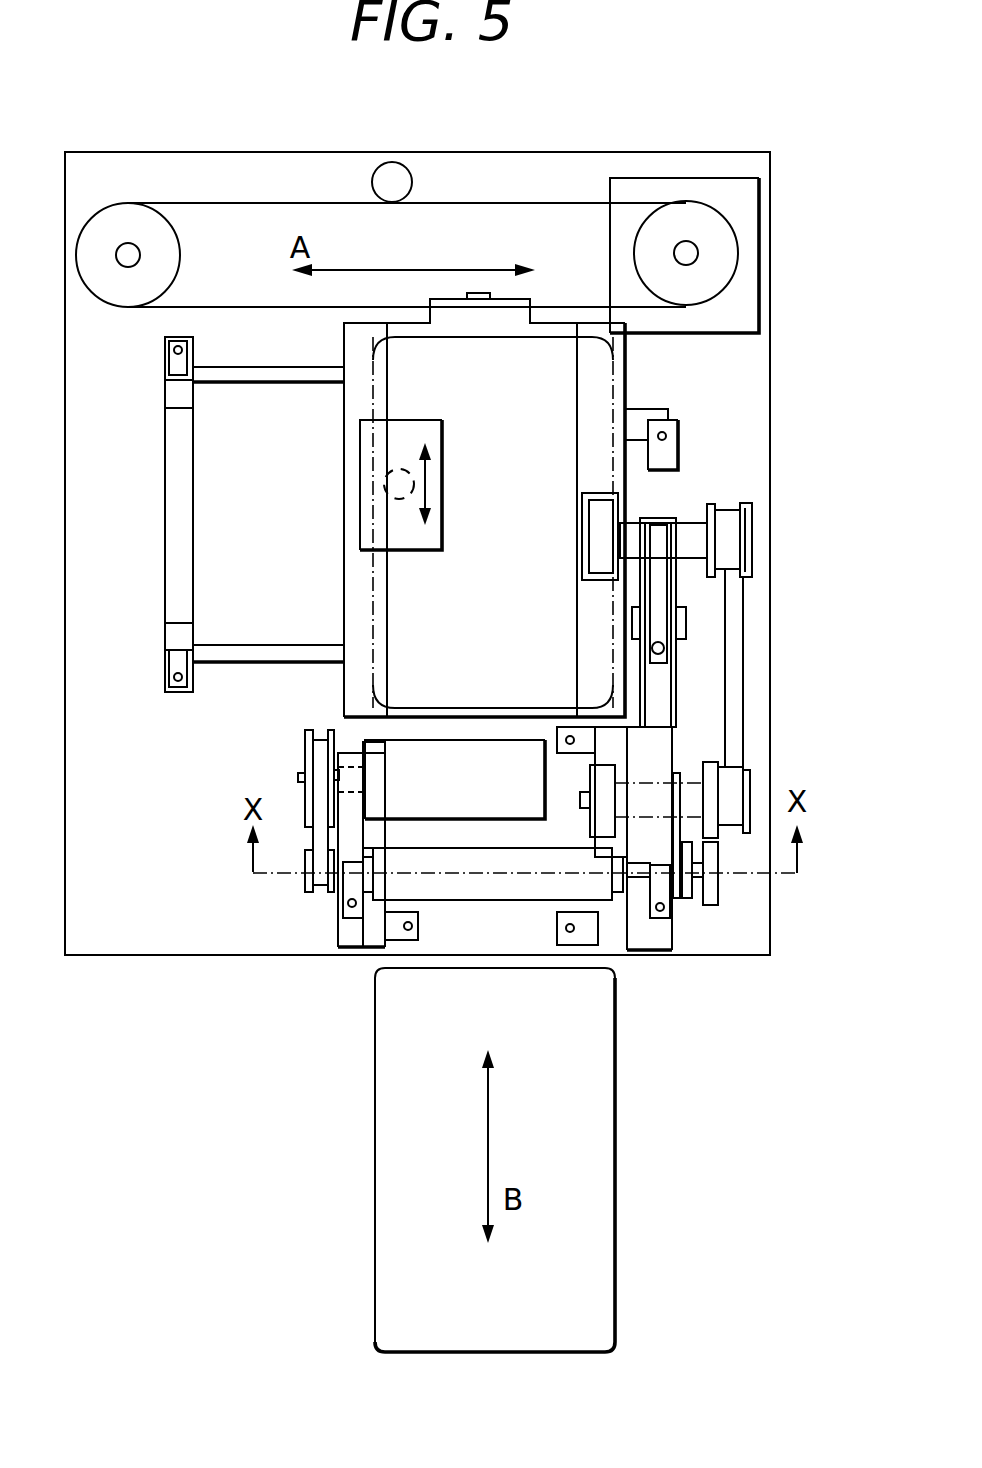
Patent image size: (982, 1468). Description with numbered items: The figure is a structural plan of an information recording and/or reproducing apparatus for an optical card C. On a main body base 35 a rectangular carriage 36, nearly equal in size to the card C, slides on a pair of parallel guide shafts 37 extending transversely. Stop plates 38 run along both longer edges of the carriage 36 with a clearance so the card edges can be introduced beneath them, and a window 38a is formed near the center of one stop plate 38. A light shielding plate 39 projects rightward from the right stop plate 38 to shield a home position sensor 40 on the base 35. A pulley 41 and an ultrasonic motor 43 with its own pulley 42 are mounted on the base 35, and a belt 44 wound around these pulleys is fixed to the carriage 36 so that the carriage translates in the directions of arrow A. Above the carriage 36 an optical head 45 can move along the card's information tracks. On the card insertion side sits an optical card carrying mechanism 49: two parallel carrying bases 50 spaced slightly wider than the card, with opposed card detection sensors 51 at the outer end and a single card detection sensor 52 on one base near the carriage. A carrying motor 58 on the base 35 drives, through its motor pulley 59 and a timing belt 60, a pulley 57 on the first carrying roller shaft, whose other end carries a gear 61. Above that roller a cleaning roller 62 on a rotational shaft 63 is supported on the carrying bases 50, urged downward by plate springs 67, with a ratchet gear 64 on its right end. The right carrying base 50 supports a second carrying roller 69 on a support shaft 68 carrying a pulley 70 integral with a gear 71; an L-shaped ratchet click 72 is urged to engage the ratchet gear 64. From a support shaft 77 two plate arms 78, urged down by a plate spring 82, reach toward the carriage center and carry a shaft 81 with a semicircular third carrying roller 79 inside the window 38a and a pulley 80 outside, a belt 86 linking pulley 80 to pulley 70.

The main body base 35 is at (190, 167).
The carriage 36 is at (632, 365).
The guide shaft 37 is at (252, 377).
The stop plate 38 is at (665, 335).
The window 38a is at (610, 495).
The light shielding plate 39 is at (648, 405).
The home position sensor 40 is at (668, 453).
The pulley 41 is at (128, 210).
The pulley 42 is at (705, 218).
The ultrasonic motor 43 is at (630, 182).
The belt 44 is at (469, 200).
The optical head 45 is at (370, 455).
The optical card carrying mechanism 49 is at (752, 705).
The carrying base 50 is at (352, 940).
The card detection sensor 51 is at (398, 936).
The card detection sensor 52 is at (560, 745).
The pulley 57 is at (305, 880).
The carrying motor 58 is at (400, 758).
The motor pulley 59 is at (305, 750).
The timing belt 60 is at (318, 833).
The gear 61 is at (710, 858).
The cleaning roller 62 is at (453, 890).
The rotational shaft 63 is at (637, 880).
The ratchet gear 64 is at (672, 887).
The plate spring 67 is at (687, 897).
The support shaft 68 is at (580, 800).
The second carrying roller 69 is at (605, 778).
The pulley 70 is at (712, 797).
The gear 71 is at (743, 780).
The ratchet click 72 is at (725, 875).
The support shaft 77 is at (686, 627).
The plate arm 78 is at (676, 595).
The third carrying roller 79 is at (597, 525).
The pulley 80 is at (752, 530).
The shaft 81 is at (688, 530).
The plate spring 82 is at (657, 593).
The belt 86 is at (733, 590).
The optical card C is at (412, 328).